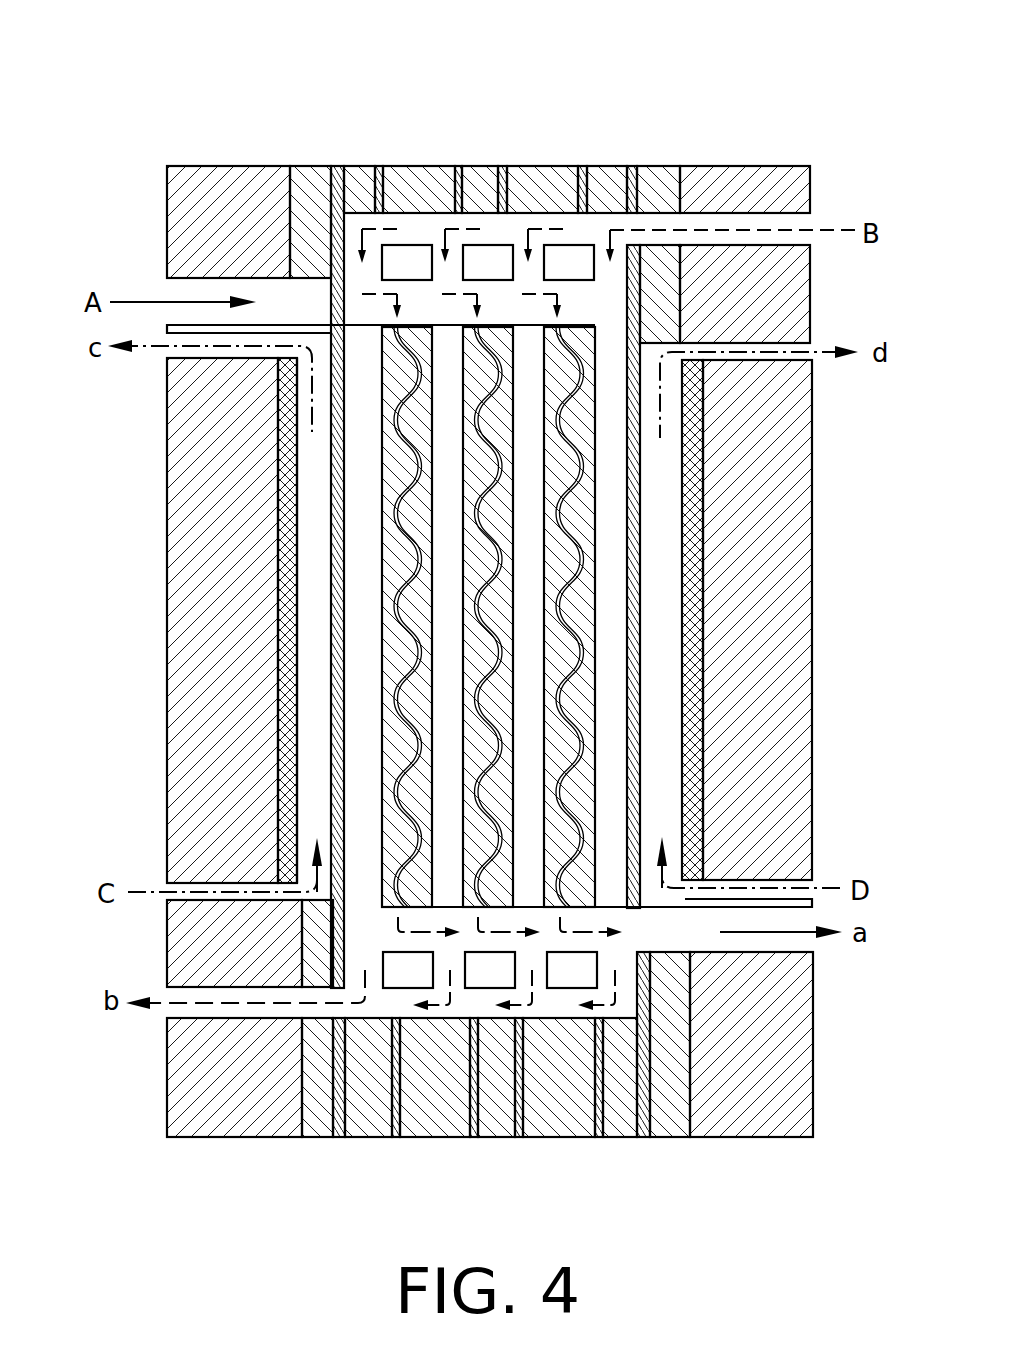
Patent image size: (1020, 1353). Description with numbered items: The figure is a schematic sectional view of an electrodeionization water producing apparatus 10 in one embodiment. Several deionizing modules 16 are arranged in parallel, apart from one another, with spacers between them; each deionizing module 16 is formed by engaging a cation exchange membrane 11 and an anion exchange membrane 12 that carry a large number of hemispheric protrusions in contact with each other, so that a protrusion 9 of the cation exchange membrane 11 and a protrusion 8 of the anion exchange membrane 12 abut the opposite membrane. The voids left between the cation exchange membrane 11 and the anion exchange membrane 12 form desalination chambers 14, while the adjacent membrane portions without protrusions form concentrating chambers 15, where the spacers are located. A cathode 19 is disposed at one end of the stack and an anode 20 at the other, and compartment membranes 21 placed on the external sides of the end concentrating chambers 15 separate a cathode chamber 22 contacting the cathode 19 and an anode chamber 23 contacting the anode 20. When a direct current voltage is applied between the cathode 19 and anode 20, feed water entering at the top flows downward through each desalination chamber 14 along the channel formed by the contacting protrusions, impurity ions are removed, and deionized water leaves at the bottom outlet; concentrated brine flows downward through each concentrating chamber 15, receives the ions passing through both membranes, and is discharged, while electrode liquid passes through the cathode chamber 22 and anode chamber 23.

The protrusion of anion exchange membrane 8 is at (430, 818).
The protrusion of cation exchange membrane 9 is at (490, 862).
The electrodeionization water producing apparatus 10 is at (616, 103).
The cation exchange membrane 11 is at (393, 562).
The anion exchange membrane 12 is at (413, 622).
The desalination chamber 14 is at (400, 765).
The concentrating chamber 15 is at (368, 935).
The deionizing module 16 is at (393, 465).
The cathode 19 is at (277, 805).
The anode 20 is at (703, 758).
The compartment membrane 21 is at (333, 823).
The cathode chamber 22 is at (310, 597).
The anode chamber 23 is at (662, 635).